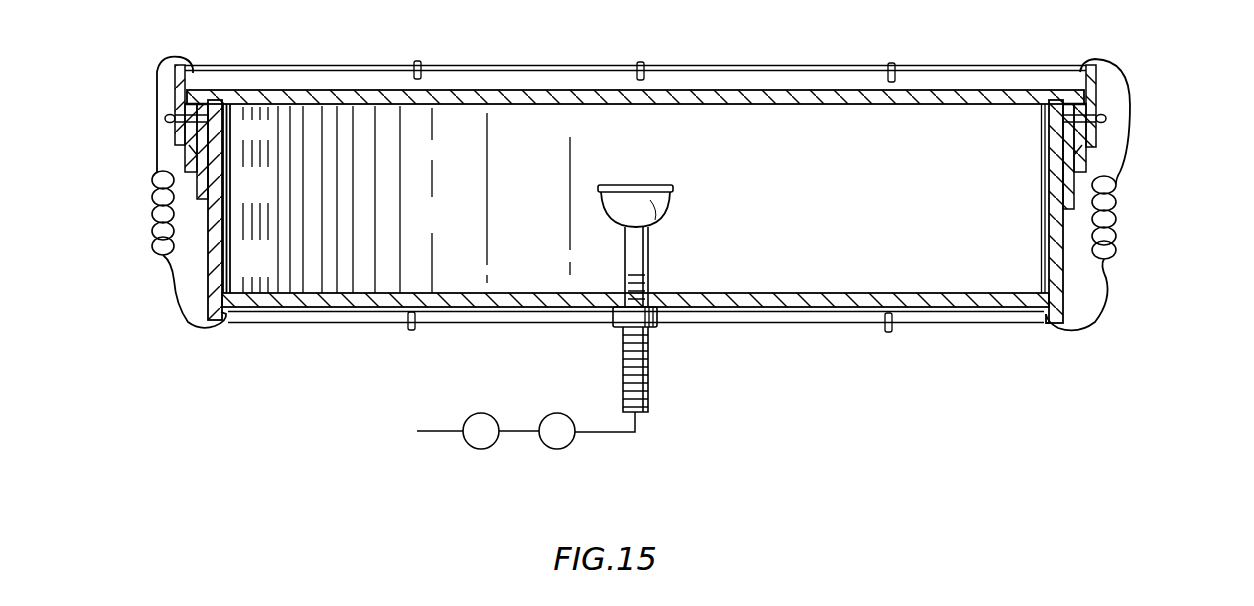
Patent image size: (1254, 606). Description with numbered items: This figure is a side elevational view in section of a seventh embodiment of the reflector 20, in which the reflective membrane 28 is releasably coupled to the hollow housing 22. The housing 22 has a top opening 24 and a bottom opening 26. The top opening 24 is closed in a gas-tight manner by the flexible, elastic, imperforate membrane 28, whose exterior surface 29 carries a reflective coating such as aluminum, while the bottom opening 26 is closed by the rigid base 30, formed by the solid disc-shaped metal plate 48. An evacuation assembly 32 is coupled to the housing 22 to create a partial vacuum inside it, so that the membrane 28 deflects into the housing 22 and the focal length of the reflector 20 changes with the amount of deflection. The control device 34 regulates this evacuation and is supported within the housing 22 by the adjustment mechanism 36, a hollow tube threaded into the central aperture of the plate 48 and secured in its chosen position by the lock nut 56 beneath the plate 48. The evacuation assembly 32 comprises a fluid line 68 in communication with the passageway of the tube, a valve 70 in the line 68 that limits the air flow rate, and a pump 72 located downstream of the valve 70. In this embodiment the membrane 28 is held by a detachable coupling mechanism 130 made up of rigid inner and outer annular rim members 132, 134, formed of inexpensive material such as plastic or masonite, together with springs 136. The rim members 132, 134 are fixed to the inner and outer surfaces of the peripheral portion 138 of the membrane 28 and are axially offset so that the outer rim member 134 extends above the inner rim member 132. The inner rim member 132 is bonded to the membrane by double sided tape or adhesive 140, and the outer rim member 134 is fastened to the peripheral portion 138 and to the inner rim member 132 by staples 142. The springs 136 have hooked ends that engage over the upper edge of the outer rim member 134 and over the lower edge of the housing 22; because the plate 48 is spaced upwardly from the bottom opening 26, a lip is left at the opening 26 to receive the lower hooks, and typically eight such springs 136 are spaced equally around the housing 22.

The reflector 20 is at (1148, 93).
The hollow housing 22 is at (205, 257).
The top opening 24 is at (404, 199).
The bottom opening 26 is at (1047, 324).
The reflective membrane 28 is at (472, 104).
The exterior surface 29 is at (695, 90).
The rigid base 30 is at (373, 302).
The evacuation assembly 32 is at (549, 440).
The control device 34 is at (673, 208).
The adjustment mechanism 36 is at (651, 260).
The metal plate 48 is at (773, 308).
The lock nut 56 is at (652, 328).
The fluid line 68 is at (620, 433).
The valve 70 is at (567, 447).
The pump 72 is at (501, 398).
The detachable coupling mechanism 130 is at (136, 214).
The inner annular rim member 132 is at (205, 184).
The outer annular rim member 134 is at (177, 85).
The springs 136 is at (637, 60).
The peripheral portion 138 is at (190, 166).
The double sided tape or adhesive 140 is at (190, 162).
The staples 142 is at (165, 119).